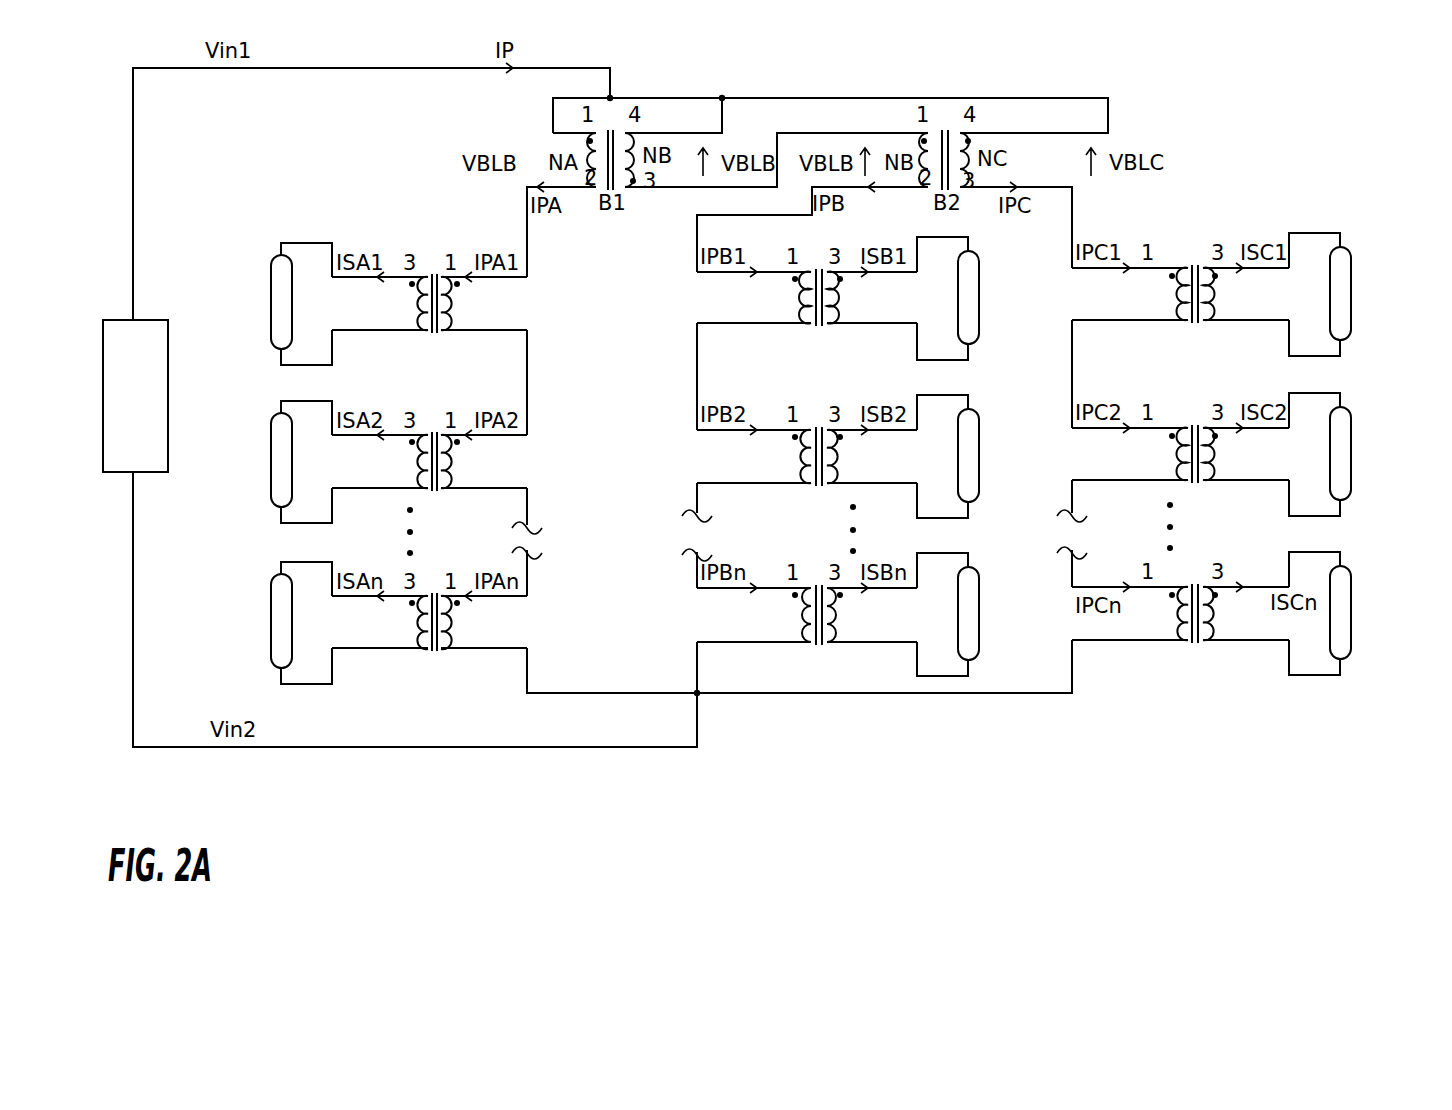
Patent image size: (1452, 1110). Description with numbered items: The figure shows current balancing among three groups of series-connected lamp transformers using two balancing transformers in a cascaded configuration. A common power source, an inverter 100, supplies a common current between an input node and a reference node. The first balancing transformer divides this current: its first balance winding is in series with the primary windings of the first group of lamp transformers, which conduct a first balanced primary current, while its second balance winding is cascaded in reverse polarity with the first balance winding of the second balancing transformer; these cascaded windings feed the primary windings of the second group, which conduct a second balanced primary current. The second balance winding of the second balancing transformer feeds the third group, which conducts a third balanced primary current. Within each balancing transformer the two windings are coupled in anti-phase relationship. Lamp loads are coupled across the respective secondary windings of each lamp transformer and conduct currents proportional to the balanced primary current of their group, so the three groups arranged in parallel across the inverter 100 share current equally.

The inverter 100 is at (158, 320).